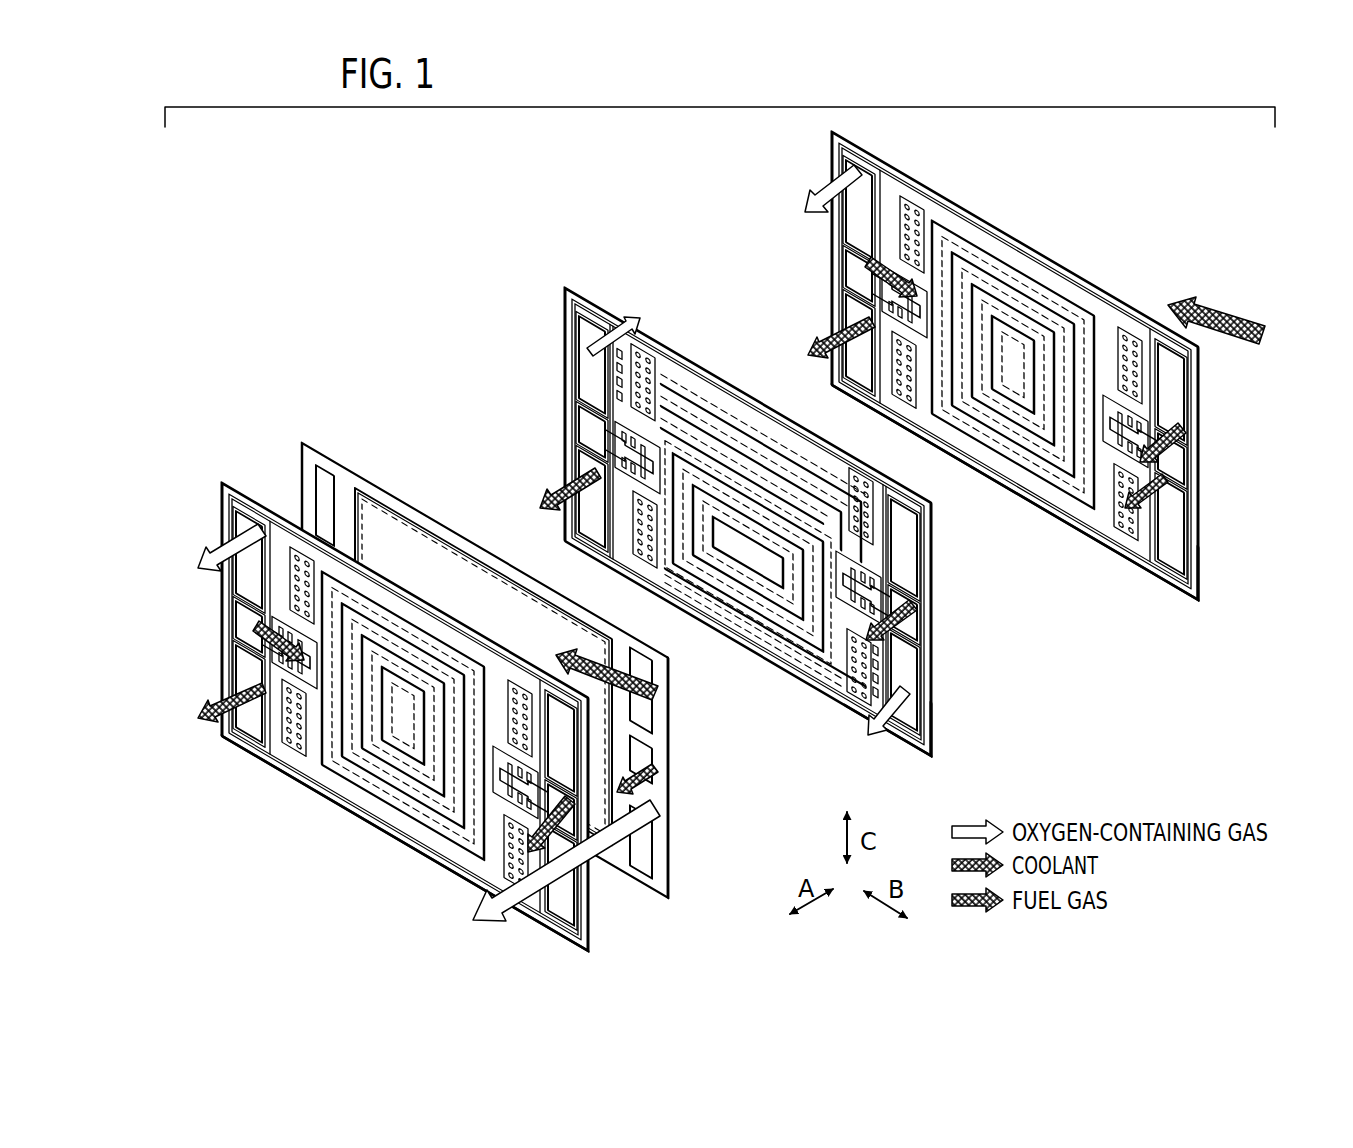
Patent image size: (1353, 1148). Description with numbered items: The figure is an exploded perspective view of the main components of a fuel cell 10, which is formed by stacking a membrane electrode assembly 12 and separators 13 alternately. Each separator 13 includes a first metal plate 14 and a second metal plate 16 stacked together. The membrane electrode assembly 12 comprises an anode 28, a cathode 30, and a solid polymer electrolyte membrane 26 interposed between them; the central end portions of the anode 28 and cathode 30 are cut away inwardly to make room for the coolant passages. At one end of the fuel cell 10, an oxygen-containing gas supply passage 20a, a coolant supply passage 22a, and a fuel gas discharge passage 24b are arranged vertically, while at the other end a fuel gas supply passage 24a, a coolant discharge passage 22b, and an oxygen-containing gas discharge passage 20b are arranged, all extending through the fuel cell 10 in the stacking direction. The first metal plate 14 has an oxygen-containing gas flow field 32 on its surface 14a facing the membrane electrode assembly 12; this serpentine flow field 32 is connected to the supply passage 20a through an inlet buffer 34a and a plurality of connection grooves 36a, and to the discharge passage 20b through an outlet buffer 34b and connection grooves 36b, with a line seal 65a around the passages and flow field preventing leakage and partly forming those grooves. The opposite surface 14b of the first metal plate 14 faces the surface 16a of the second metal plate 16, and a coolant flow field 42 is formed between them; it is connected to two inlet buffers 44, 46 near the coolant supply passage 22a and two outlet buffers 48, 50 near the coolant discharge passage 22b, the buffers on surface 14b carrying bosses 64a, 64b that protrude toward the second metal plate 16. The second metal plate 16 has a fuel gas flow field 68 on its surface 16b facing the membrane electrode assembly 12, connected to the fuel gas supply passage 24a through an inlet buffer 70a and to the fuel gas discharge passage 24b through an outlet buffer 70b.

The fuel cell 10 is at (372, 285).
The membrane electrode assembly 12 is at (300, 439).
The separator 13 is at (786, 186).
The first metal plate 14 is at (691, 352).
The surface of the first metal plate 14a is at (868, 712).
The surface of the first metal plate 14b is at (934, 758).
The second metal plate 16 is at (222, 481).
The surface of the second metal plate 16a is at (290, 777).
The surface of the second metal plate 16b is at (1183, 600).
The oxygen-containing gas supply passage 20a is at (240, 524).
The oxygen-containing gas discharge passage 20b is at (592, 850).
The coolant supply passage 22a is at (248, 620).
The coolant discharge passage 22b is at (592, 765).
The fuel gas supply passage 24a is at (568, 688).
The fuel gas discharge passage 24b is at (255, 672).
The solid polymer electrolyte membrane 26 is at (662, 885).
The anode 28 is at (415, 545).
The cathode 30 is at (455, 565).
The oxygen-containing gas flow field 32 is at (719, 398).
The inlet buffer 34a is at (656, 354).
The outlet buffer 34b is at (854, 651).
The connection grooves 36a is at (618, 345).
The connection grooves 36b is at (869, 671).
The coolant flow field 42 is at (372, 783).
The inlet buffer 44 is at (614, 521).
The inlet buffer 46 is at (916, 249).
The outlet buffer 48 is at (1114, 479).
The outlet buffer 50 is at (876, 509).
The bosses 64a is at (641, 561).
The bosses 64b is at (871, 499).
The line seal 65a is at (770, 641).
The fuel gas flow field 68 is at (412, 806).
The inlet buffer 70a is at (517, 689).
The outlet buffer 70b is at (284, 751).